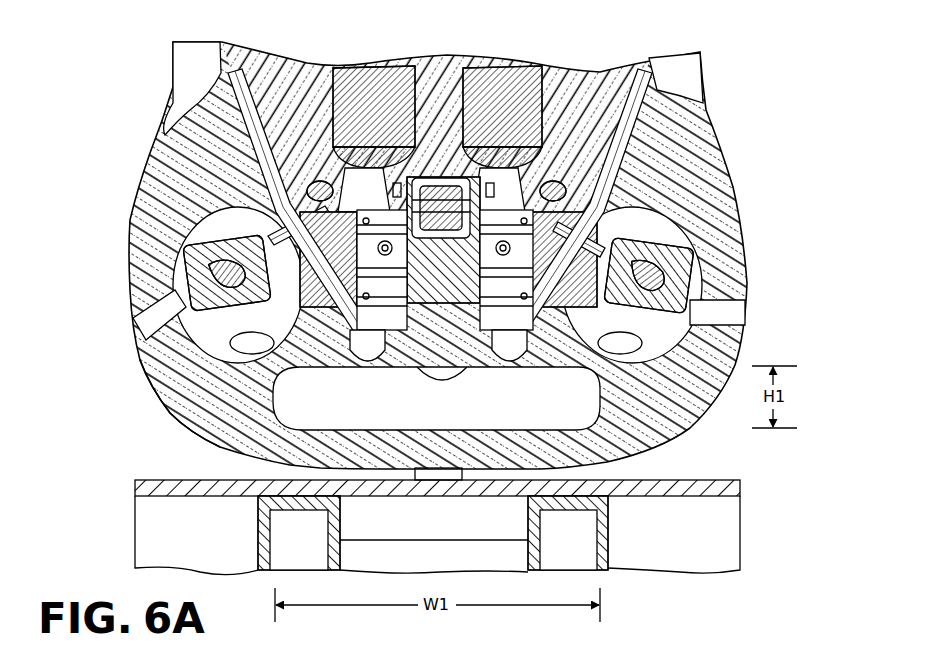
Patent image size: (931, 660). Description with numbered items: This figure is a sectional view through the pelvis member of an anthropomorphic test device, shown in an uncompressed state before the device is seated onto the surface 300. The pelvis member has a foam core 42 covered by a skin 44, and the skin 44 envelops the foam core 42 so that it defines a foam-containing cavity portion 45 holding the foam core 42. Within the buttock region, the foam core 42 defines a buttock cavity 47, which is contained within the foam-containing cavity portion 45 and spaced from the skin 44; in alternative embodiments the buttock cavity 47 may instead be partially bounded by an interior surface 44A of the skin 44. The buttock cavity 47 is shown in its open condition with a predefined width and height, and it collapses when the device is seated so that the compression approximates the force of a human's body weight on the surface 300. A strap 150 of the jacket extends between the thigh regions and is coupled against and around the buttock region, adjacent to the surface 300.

The foam core 42 is at (137, 222).
The skin 44 is at (130, 257).
The interior surface of the skin 44A is at (733, 211).
The foam-containing cavity portion 45 is at (183, 368).
The buttock cavity 47 is at (312, 401).
The strap 150 is at (413, 472).
The surface 300 is at (718, 541).